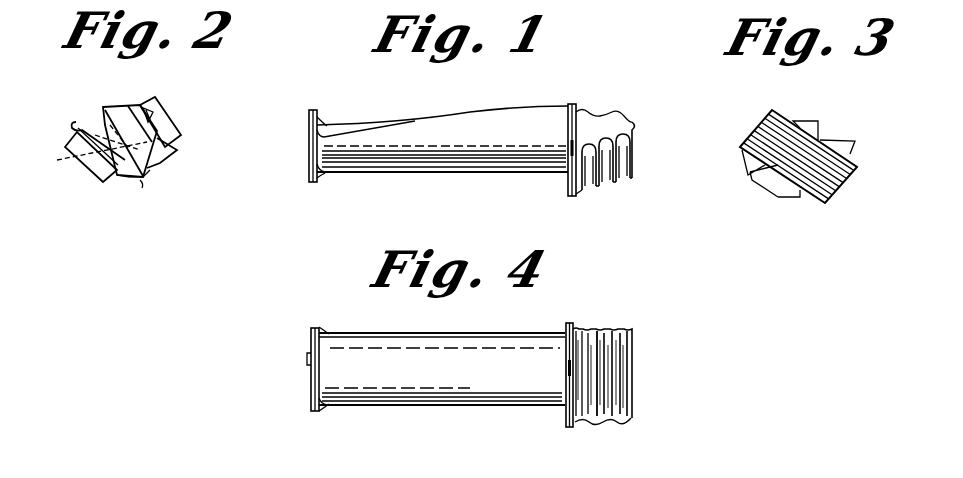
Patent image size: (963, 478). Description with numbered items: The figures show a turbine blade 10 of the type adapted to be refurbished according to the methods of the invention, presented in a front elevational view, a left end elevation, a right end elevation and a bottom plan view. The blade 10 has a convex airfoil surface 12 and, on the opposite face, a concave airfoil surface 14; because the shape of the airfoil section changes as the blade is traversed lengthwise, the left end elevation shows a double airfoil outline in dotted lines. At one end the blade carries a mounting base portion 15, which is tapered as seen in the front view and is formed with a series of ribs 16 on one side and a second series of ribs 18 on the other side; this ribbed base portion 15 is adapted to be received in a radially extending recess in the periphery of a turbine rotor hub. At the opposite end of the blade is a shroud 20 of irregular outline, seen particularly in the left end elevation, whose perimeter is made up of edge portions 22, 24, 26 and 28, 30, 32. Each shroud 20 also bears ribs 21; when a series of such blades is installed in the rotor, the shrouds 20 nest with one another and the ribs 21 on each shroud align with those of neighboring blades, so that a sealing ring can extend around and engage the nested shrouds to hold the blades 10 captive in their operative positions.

In FIG. 1, the turbine blade 10 is at (519, 101).
In FIG. 2, the turbine blade 10 is at (182, 118).
In FIG. 3, the turbine blade 10 is at (785, 216).
In FIG. 4, the turbine blade 10 is at (428, 412).
In FIG. 1, the convex airfoil surface 12 is at (470, 150).
In FIG. 2, the convex airfoil surface 12 is at (70, 160).
In FIG. 4, the convex airfoil surface 12 is at (376, 345).
In FIG. 2, the concave airfoil surface 14 is at (158, 115).
In FIG. 1, the mounting base portion 15 is at (590, 118).
In FIG. 2, the mounting base portion 15 is at (90, 173).
In FIG. 3, the mounting base portion 15 is at (846, 203).
In FIG. 4, the mounting base portion 15 is at (592, 422).
In FIG. 1, the series of ribs 16 is at (617, 118).
In FIG. 3, the series of ribs 16 is at (783, 130).
In FIG. 1, the second series of ribs 18 is at (604, 183).
In FIG. 3, the second series of ribs 18 is at (768, 172).
In FIG. 4, the second series of ribs 18 is at (610, 330).
In FIG. 1, the shroud 20 is at (312, 108).
In FIG. 2, the shroud 20 is at (139, 196).
In FIG. 3, the shroud 20 is at (812, 126).
In FIG. 4, the shroud 20 is at (312, 326).
In FIG. 1, the ribs on shroud 21 is at (307, 160).
In FIG. 2, the ribs on shroud 21 is at (118, 120).
In FIG. 4, the ribs on shroud 21 is at (303, 392).
In FIG. 2, the edge portion 22 is at (72, 124).
In FIG. 2, the edge portion 24 is at (92, 118).
In FIG. 2, the edge portion 26 is at (128, 112).
In FIG. 2, the edge portion 28 is at (128, 190).
In FIG. 2, the edge portion 30 is at (155, 180).
In FIG. 2, the edge portion 32 is at (172, 168).